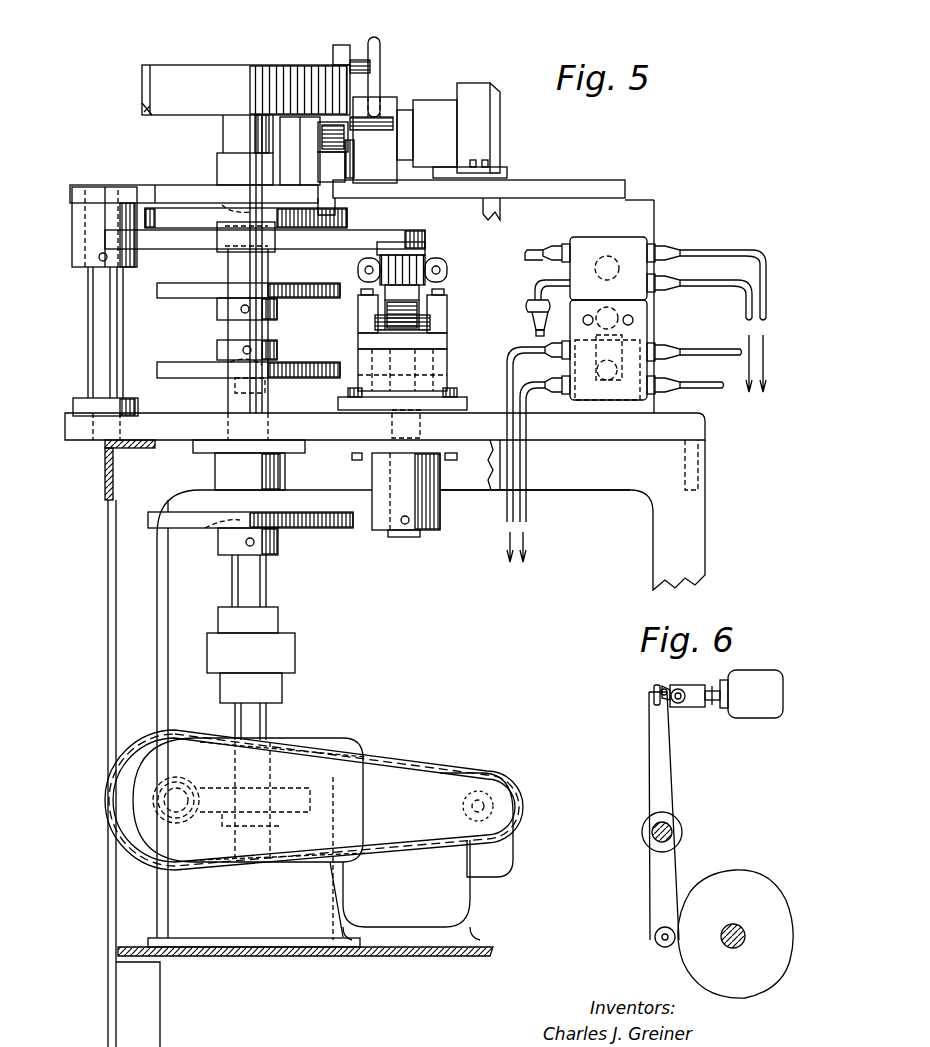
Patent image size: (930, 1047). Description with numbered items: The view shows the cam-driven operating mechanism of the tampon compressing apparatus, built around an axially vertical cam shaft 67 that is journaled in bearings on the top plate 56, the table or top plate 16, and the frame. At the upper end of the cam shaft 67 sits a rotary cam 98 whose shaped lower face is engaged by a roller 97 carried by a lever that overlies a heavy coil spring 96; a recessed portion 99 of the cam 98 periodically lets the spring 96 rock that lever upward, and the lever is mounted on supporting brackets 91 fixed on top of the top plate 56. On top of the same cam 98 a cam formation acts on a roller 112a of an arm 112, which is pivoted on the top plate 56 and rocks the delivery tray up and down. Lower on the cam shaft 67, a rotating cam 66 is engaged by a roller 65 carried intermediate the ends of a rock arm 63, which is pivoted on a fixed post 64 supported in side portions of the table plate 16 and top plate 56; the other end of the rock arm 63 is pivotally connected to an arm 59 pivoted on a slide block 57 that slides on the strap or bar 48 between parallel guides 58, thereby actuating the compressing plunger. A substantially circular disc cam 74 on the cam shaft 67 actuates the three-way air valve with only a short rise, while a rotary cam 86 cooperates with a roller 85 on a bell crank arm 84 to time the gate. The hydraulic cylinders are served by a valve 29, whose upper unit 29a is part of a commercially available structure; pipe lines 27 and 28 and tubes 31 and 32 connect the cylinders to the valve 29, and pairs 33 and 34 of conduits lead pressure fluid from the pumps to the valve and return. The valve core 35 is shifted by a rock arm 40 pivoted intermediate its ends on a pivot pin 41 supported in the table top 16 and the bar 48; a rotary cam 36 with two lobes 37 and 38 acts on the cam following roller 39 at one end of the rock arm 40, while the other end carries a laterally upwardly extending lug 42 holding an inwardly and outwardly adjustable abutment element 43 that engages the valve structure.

In FIG. 5, the top plate 16 is at (700, 432).
In FIG. 5, the pipe line 27 is at (700, 350).
In FIG. 5, the pipe line 28 is at (535, 332).
In FIG. 5, the valve 29 is at (642, 238).
In FIG. 6, the valve 29 is at (768, 670).
In FIG. 5, the upper valve unit 29a is at (630, 402).
In FIG. 5, the tube or pipeline 31 is at (718, 383).
In FIG. 5, the tube or pipeline 32 is at (534, 250).
In FIG. 5, the pair of pump to valve conduits 33 is at (754, 300).
In FIG. 5, the pair of pump to valve conduits 34 is at (522, 503).
In FIG. 6, the valve core 35 is at (717, 684).
In FIG. 5, the rotary cam 36 is at (215, 365).
In FIG. 6, the rotary cam 36 is at (715, 888).
In FIG. 6, the cam lobe 37 is at (762, 878).
In FIG. 6, the cam lobe 38 is at (770, 984).
In FIG. 5, the cam following roller 39 is at (225, 378).
In FIG. 6, the cam following roller 39 is at (655, 940).
In FIG. 5, the rock arm 40 is at (500, 380).
In FIG. 6, the rock arm 40 is at (650, 782).
In FIG. 5, the pivot pin 41 is at (392, 428).
In FIG. 6, the pivot pin 41 is at (672, 832).
In FIG. 6, the lug or ear 42 is at (654, 694).
In FIG. 6, the adjustable abutment element 43 is at (660, 686).
In FIG. 5, the strap or bar 48 is at (358, 340).
In FIG. 5, the top plate 56 is at (548, 182).
In FIG. 5, the slide block 57 is at (422, 296).
In FIG. 5, the parallel guides 58 is at (358, 320).
In FIG. 5, the arm 59 is at (426, 250).
In FIG. 5, the rock arm 63 is at (326, 242).
In FIG. 5, the fixed pivot or post 64 is at (92, 331).
In FIG. 5, the roller 65 is at (222, 205).
In FIG. 5, the rotating cam 66 is at (349, 217).
In FIG. 5, the cam shaft 67 is at (228, 260).
In FIG. 6, the cam shaft 67 is at (752, 917).
In FIG. 5, the cam 74 is at (198, 295).
In FIG. 5, the bell crank arm 84 is at (374, 522).
In FIG. 5, the roller 85 is at (232, 523).
In FIG. 5, the rotary cam 86 is at (204, 520).
In FIG. 5, the supporting brackets 91 is at (470, 84).
In FIG. 5, the coil spring 96 is at (348, 165).
In FIG. 5, the roller 97 is at (322, 140).
In FIG. 5, the rotary cam 98 is at (177, 70).
In FIG. 5, the recessed portion 99 is at (147, 113).
In FIG. 5, the arm 112 is at (383, 48).
In FIG. 5, the roller 112a is at (343, 45).